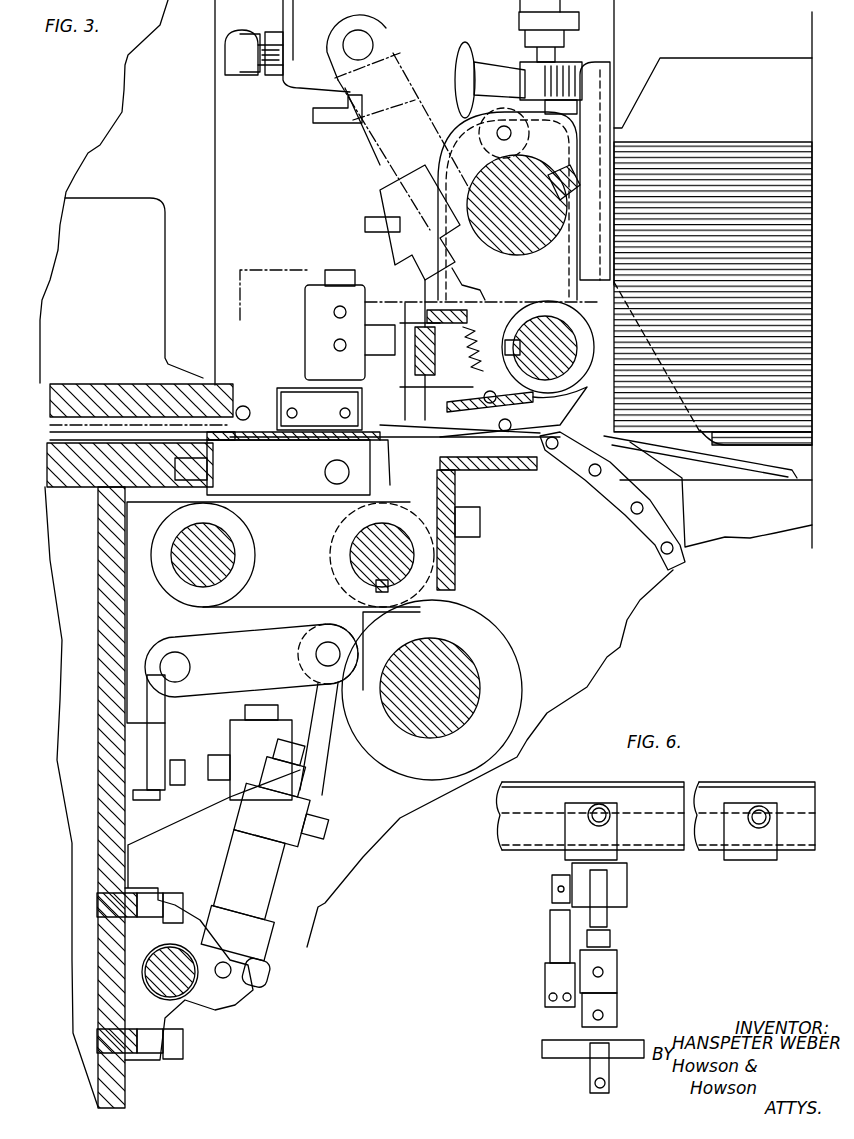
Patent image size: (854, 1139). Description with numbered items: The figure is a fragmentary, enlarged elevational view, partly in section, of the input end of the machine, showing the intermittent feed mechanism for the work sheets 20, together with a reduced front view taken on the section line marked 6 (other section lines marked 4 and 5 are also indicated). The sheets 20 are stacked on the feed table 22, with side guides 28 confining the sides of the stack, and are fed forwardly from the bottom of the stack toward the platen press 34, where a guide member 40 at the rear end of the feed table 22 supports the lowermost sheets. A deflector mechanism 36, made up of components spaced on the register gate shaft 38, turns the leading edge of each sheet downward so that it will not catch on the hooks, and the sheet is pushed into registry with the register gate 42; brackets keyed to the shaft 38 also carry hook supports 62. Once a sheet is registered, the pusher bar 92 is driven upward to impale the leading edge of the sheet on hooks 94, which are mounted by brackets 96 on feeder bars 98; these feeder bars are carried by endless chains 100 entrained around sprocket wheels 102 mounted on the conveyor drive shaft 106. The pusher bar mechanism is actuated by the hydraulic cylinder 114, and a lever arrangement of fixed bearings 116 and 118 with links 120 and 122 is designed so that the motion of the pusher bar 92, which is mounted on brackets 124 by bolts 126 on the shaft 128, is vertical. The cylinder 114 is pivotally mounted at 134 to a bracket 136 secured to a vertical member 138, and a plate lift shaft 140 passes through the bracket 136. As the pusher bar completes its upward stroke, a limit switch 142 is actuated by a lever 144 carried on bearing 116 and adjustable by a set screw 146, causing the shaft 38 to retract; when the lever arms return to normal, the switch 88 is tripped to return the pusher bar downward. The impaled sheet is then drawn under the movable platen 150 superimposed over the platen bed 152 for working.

In FIG. 3, the work sheets 20 is at (752, 165).
In FIG. 3, the feed table 22 is at (780, 528).
In FIG. 3, the side guides 28 is at (727, 58).
In FIG. 3, the platen press 34 is at (124, 96).
In FIG. 3, the deflector mechanism 36 is at (513, 428).
In FIG. 3, the register gate shaft 38 is at (541, 335).
In FIG. 3, the guide member 40 is at (712, 476).
In FIG. 3, the register gate 42 is at (410, 475).
In FIG. 3, the hook support 62 is at (430, 405).
In FIG. 3, the switch 88 is at (327, 298).
In FIG. 3, the pusher bar 92 is at (498, 470).
In FIG. 6, the pusher bar 92 is at (675, 852).
In FIG. 3, the hooks 94 is at (486, 421).
In FIG. 3, the brackets 96 is at (368, 450).
In FIG. 3, the feeder bars 98 is at (292, 388).
In FIG. 3, the endless chains 100 is at (672, 572).
In FIG. 3, the sprocket wheels 102 is at (612, 640).
In FIG. 3, the conveyor drive shaft 106 is at (442, 725).
In FIG. 3, the hydraulic cylinder 114 is at (278, 874).
In FIG. 6, the hydraulic cylinder 114 is at (612, 996).
In FIG. 3, the fixed bearing 116 is at (190, 667).
In FIG. 3, the fixed bearing 118 is at (232, 545).
In FIG. 3, the link 120 is at (335, 690).
In FIG. 6, the link 120 is at (618, 905).
In FIG. 3, the link 122 is at (296, 598).
In FIG. 6, the link 122 is at (565, 806).
In FIG. 3, the brackets 124 is at (398, 622).
In FIG. 6, the brackets 124 is at (612, 855).
In FIG. 3, the bolts 126 is at (482, 534).
In FIG. 6, the bolts 126 is at (599, 804).
In FIG. 3, the shaft 128 is at (455, 570).
In FIG. 3, the pivot mounting 134 is at (232, 972).
In FIG. 6, the pivot mounting 134 is at (612, 1047).
In FIG. 3, the bracket 136 is at (208, 1000).
In FIG. 6, the bracket 136 is at (592, 1070).
In FIG. 3, the vertical member 138 is at (125, 1085).
In FIG. 3, the plate lift shaft 140 is at (165, 971).
In FIG. 6, the plate lift shaft 140 is at (552, 1045).
In FIG. 3, the limit switch 142 is at (275, 748).
In FIG. 6, the limit switch 142 is at (550, 930).
In FIG. 3, the lever 144 is at (166, 740).
In FIG. 6, the lever 144 is at (552, 898).
In FIG. 3, the set screw 146 is at (178, 785).
In FIG. 3, the movable platen 150 is at (145, 200).
In FIG. 3, the platen bed 152 is at (88, 480).
In FIG. 3, the section line 4- 4 is at (735, 273).
In FIG. 3, the section line 5- 5 is at (258, 396).
In FIG. 3, the section line 6- 6 is at (548, 462).